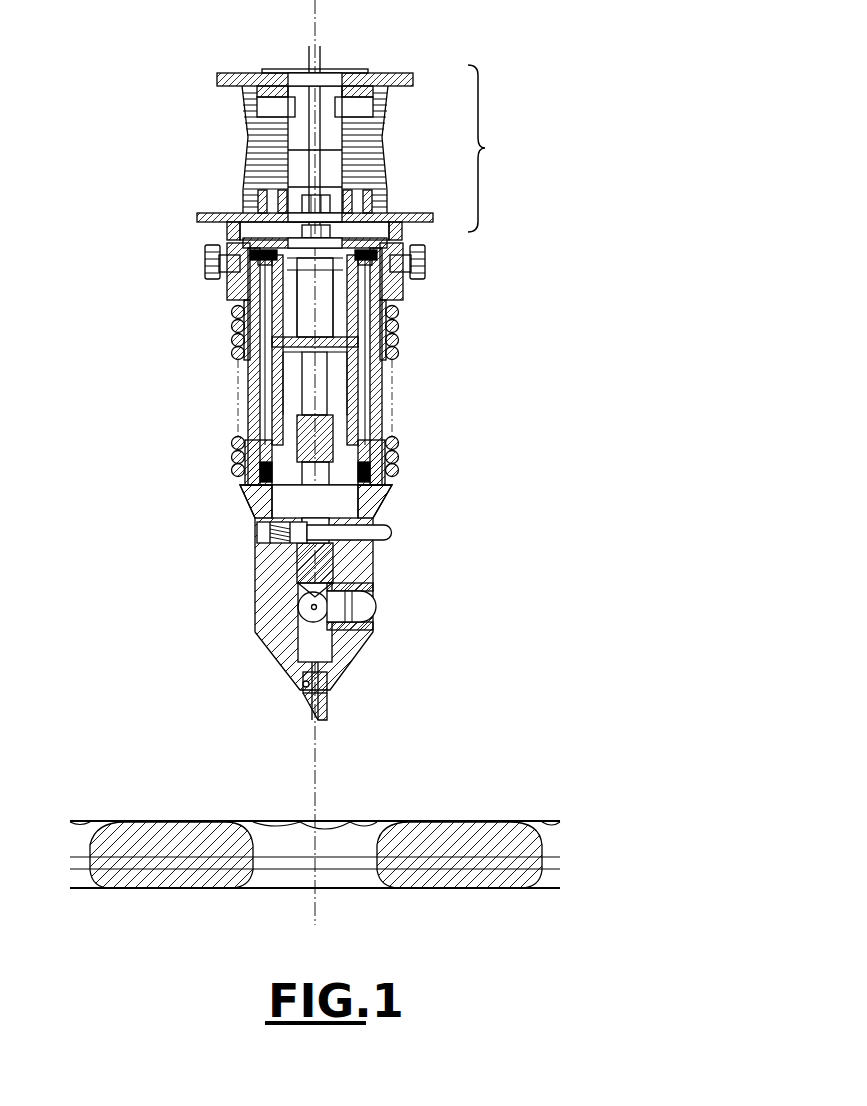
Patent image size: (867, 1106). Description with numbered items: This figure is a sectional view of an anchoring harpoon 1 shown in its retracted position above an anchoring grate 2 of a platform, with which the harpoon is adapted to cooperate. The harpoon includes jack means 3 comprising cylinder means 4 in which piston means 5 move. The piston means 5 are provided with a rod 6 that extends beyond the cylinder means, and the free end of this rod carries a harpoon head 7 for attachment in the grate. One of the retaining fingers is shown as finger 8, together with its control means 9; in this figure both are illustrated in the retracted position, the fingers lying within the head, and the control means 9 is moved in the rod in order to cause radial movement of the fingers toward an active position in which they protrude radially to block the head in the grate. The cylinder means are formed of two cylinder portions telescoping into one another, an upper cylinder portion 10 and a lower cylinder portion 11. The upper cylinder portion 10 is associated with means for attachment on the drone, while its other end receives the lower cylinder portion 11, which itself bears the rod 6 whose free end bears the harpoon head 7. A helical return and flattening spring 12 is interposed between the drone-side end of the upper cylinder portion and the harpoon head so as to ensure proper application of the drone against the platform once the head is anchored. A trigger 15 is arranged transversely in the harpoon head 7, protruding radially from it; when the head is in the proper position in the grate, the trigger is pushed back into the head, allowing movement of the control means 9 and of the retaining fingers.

The harpoon 1 is at (165, 294).
The anchoring grate 2 is at (160, 900).
The jack means 3 is at (222, 462).
The cylinder means 4 is at (245, 383).
The piston means 5 is at (380, 377).
The rod 6 is at (252, 490).
The harpoon head 7 is at (257, 640).
The finger 8 is at (388, 618).
The control means 9 is at (272, 565).
The upper cylinder portion 10 is at (402, 293).
The lower cylinder portion 11 is at (390, 338).
The helical return and flattening spring 12 is at (413, 455).
The trigger 15 is at (403, 533).